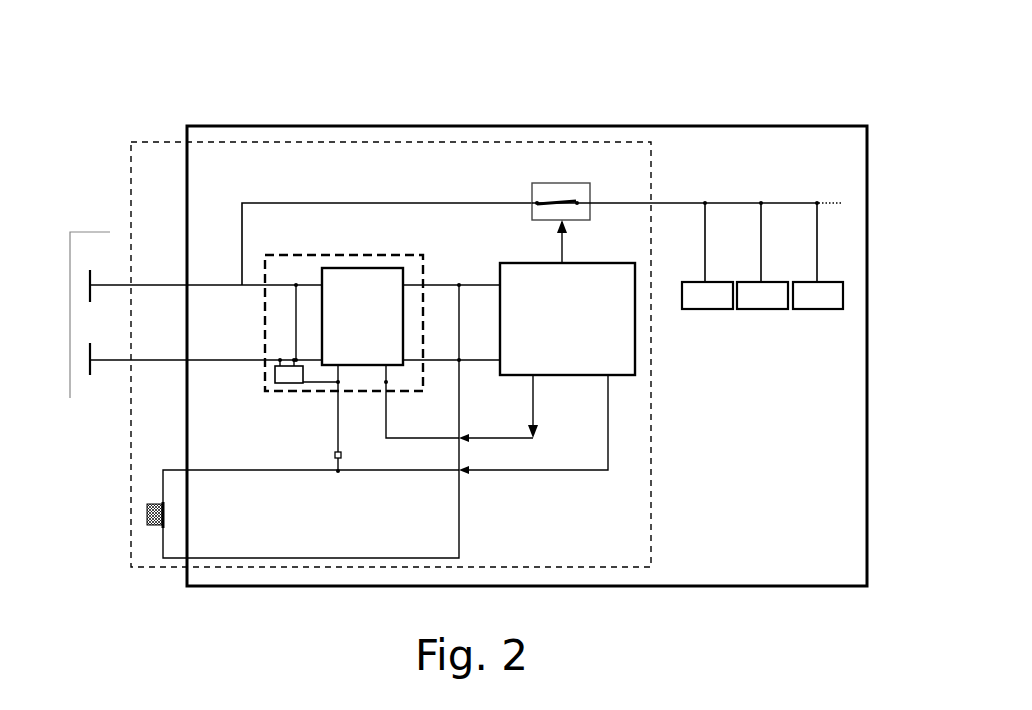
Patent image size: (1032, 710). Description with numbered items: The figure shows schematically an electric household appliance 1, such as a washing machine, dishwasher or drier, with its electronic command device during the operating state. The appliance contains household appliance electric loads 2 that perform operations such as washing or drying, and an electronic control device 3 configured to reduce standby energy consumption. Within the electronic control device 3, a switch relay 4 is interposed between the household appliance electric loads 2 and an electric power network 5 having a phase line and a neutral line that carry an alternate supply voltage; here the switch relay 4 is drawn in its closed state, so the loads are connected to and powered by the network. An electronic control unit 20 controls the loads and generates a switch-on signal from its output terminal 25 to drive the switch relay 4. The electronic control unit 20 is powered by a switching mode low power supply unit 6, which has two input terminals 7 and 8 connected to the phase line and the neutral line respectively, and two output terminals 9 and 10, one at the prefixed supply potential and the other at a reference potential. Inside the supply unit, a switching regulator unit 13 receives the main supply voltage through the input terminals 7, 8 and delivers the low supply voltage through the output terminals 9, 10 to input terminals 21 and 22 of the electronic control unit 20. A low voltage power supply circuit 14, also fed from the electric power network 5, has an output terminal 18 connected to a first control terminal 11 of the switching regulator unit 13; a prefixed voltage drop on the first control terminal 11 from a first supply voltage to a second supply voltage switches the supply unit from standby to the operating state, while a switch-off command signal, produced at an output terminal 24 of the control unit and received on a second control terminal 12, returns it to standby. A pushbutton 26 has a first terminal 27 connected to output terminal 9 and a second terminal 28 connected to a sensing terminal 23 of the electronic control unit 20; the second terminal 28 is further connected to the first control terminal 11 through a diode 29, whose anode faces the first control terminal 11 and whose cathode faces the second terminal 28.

The electric household appliance 1 is at (708, 126).
The household appliance electric loads 2 is at (701, 307).
The electronic control device 3 is at (472, 155).
The switch relay 4 is at (560, 182).
The electric power network 5 is at (96, 231).
The switching mode low power supply unit 6 is at (335, 255).
The input terminal 7 is at (242, 284).
The input terminal 8 is at (240, 360).
The output terminal 9 is at (436, 289).
The output terminal 10 is at (438, 363).
The first control terminal 11 is at (340, 412).
The second control terminal 12 is at (386, 407).
The switching regulator unit 13 is at (349, 328).
The low voltage power supply circuit 14 is at (282, 384).
The output terminal 18 is at (325, 384).
The electronic control unit 20 is at (554, 322).
The input terminal 21 is at (478, 283).
The input terminal 22 is at (486, 362).
The sensing terminal 23 is at (610, 398).
The output terminal 24 is at (532, 390).
The output terminal 25 is at (558, 251).
The pushbutton 26 is at (147, 512).
The first terminal 27 is at (162, 537).
The second terminal 28 is at (162, 502).
The diode 29 is at (334, 455).